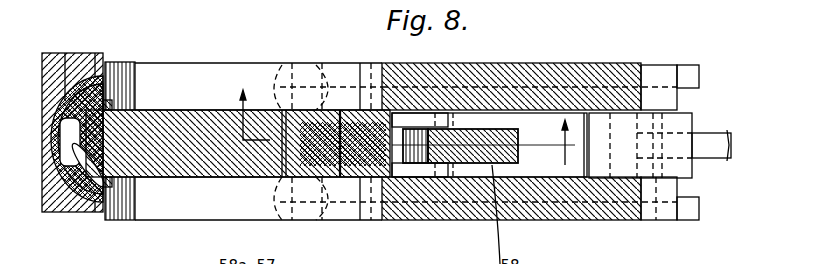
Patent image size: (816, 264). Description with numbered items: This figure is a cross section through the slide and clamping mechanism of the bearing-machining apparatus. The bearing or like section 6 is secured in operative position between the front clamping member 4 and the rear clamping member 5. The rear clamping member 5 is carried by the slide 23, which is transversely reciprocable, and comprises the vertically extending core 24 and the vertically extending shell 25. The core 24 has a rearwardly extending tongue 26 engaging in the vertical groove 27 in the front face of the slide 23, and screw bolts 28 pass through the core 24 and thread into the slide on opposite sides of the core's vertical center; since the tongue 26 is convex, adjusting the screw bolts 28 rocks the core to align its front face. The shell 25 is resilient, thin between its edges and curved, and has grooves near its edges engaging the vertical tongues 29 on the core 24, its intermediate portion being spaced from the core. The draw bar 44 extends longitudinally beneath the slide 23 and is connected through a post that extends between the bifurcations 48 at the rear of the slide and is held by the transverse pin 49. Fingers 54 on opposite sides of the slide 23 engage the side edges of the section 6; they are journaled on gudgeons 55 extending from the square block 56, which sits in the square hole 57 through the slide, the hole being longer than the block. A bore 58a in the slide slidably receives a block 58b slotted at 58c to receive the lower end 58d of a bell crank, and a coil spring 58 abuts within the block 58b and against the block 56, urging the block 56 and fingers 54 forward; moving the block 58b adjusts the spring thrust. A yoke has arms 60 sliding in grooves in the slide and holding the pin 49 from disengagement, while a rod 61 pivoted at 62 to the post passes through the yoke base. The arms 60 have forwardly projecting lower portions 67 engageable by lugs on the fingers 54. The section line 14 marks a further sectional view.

The front clamping member 4 is at (50, 212).
The rear clamping member 5 is at (92, 212).
The section of the bearing 6 is at (74, 212).
The section line 14- 14 is at (238, 100).
The slide 23 is at (428, 220).
The core 24 is at (118, 180).
The shell 25 is at (67, 62).
The tongue 26 is at (110, 135).
The vertical groove 27 is at (118, 145).
The screw bolts 28 is at (125, 168).
The vertical tongues 29 is at (95, 62).
The draw bar 44 is at (693, 123).
The bifurcations 48 is at (676, 192).
The transverse pin 49 is at (632, 65).
The fingers 54 is at (222, 73).
The gudgeons 55 is at (308, 222).
The square block 56 is at (330, 63).
The square hole 57 is at (274, 105).
The coil spring 58 is at (444, 113).
The bore 58a is at (371, 62).
The block 58b is at (455, 118).
The slot 58c is at (437, 130).
The lower end of the bell crank 58d is at (412, 130).
The arms 60 is at (535, 220).
The rod 61 is at (725, 145).
The pivotal connection 62 is at (655, 222).
The forwardly projecting lower portions 67 is at (342, 220).